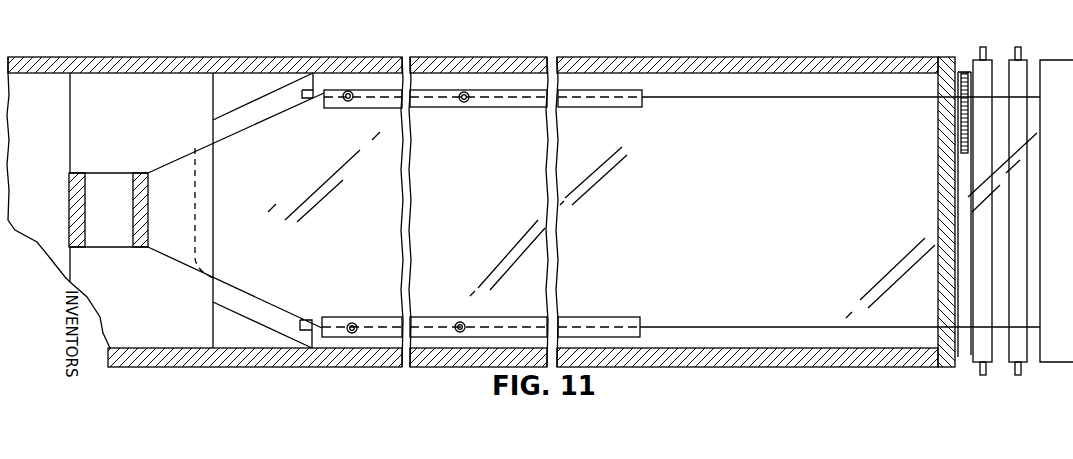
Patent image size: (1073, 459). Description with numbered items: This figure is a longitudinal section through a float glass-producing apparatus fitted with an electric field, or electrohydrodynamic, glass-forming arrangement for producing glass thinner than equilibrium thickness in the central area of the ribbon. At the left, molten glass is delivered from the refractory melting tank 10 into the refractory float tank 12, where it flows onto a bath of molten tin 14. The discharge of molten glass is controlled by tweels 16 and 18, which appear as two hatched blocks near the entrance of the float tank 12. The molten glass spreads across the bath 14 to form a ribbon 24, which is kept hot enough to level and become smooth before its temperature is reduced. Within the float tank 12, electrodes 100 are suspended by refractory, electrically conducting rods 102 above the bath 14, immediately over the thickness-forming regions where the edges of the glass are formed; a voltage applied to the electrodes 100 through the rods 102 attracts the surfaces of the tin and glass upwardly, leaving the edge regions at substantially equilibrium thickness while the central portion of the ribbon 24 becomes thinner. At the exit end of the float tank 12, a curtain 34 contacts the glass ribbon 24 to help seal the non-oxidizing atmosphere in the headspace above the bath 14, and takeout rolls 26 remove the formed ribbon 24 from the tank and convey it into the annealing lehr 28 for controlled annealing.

The refractory melting tank 10 is at (55, 57).
The refractory float tank 12 is at (428, 57).
The bath of molten tin 14 is at (702, 83).
The tweel 16 is at (76, 173).
The tweel 18 is at (138, 173).
The ribbon 24 is at (676, 221).
The takeout rolls 26 is at (1018, 376).
The annealing lehr 28 is at (1060, 362).
The curtain 34 is at (965, 72).
The electrodes 100 is at (422, 106).
The refractory, electrically conducting rods 102 is at (347, 100).